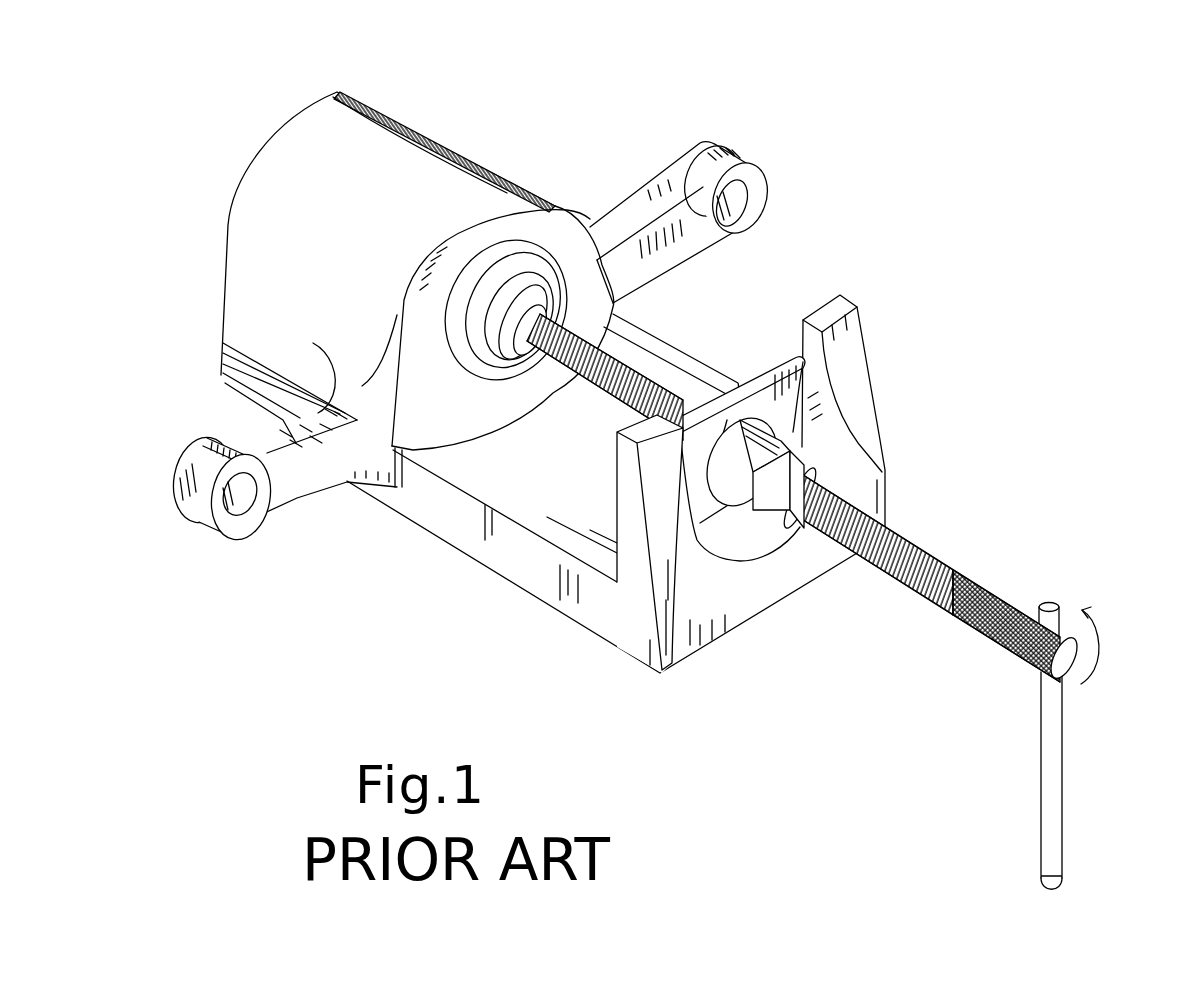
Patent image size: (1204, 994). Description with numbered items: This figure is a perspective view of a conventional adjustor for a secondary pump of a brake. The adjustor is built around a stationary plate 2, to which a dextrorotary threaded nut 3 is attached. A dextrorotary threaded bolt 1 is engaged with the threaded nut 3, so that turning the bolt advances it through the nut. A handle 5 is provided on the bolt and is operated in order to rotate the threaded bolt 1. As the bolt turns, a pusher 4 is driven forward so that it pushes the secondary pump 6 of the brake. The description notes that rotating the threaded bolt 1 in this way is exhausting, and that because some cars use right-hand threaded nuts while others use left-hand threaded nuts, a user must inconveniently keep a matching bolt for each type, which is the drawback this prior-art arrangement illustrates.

The dextrorotary threaded bolt 1 is at (903, 585).
The stationary plate 2 is at (767, 377).
The dextrorotary threaded nut 3 is at (780, 468).
The pusher 4 is at (482, 352).
The handle 5 is at (1048, 805).
The secondary pump 6 is at (517, 275).